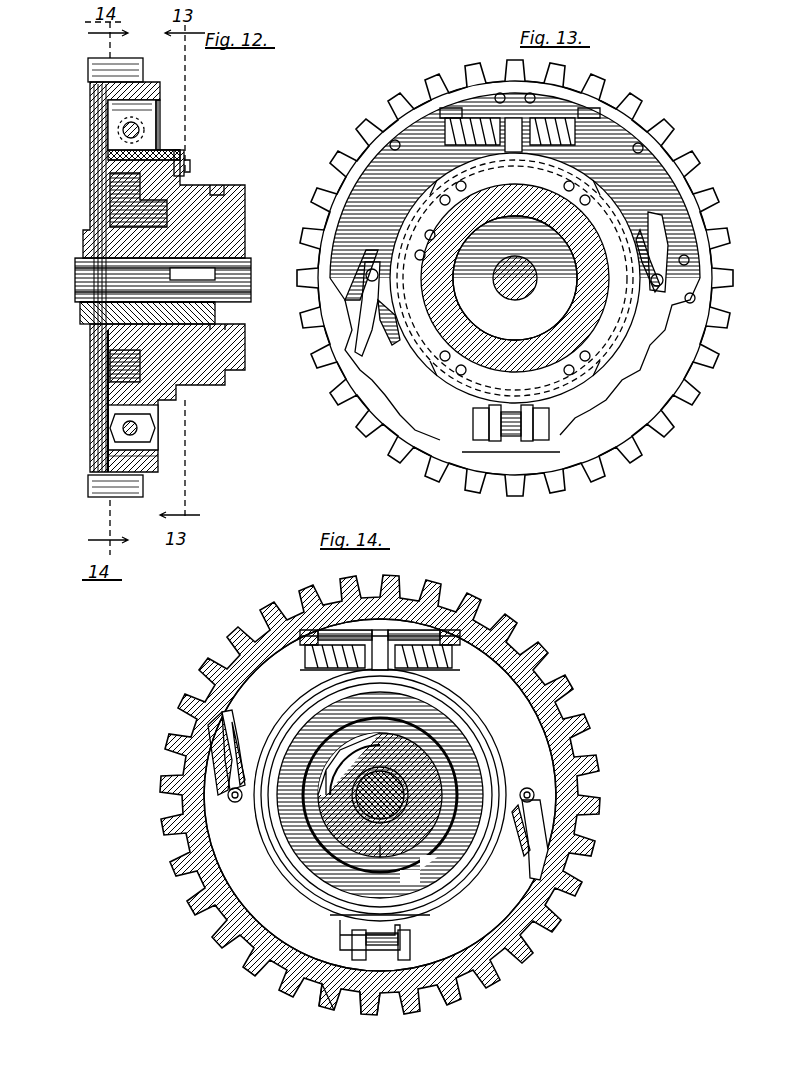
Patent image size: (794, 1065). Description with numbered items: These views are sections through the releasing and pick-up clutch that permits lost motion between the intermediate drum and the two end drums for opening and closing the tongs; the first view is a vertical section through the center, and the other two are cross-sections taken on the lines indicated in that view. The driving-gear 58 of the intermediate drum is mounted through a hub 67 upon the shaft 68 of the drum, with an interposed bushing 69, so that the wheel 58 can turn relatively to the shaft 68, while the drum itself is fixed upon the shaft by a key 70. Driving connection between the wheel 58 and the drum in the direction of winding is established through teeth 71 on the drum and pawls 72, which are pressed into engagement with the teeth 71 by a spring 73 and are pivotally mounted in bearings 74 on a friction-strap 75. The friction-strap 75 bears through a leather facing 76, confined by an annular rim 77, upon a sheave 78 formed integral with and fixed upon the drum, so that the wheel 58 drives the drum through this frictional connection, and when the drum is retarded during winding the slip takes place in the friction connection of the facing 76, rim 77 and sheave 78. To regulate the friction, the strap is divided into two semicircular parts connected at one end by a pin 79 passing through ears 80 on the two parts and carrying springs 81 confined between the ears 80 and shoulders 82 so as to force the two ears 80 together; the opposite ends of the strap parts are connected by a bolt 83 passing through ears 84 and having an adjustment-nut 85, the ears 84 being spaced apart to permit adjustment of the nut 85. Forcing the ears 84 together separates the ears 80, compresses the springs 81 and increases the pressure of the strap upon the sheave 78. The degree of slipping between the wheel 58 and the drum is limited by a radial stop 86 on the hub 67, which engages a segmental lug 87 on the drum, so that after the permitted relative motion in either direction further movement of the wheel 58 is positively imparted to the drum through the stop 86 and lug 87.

In FIG. 12, the driving-gear 58 is at (88, 70).
In FIG. 13, the driving-gear 58 is at (515, 80).
In FIG. 14, the driving-gear 58 is at (283, 607).
In FIG. 12, the hub 67 is at (90, 318).
In FIG. 12, the shaft 68 is at (78, 285).
In FIG. 12, the bushing 69 is at (80, 308).
In FIG. 12, the key 70 is at (215, 276).
In FIG. 13, the teeth 71 is at (668, 166).
In FIG. 14, the teeth 71 is at (545, 678).
In FIG. 13, the pawls 72 is at (667, 252).
In FIG. 14, the pawls 72 is at (225, 755).
In FIG. 13, the spring 73 is at (652, 232).
In FIG. 14, the spring 73 is at (238, 772).
In FIG. 14, the bearings 74 is at (235, 803).
In FIG. 12, the friction-strap 75 is at (162, 152).
In FIG. 14, the friction-strap 75 is at (502, 720).
In FIG. 12, the leather facing 76 is at (160, 145).
In FIG. 14, the leather facing 76 is at (470, 737).
In FIG. 12, the annular rim 77 is at (150, 190).
In FIG. 13, the annular rim 77 is at (560, 378).
In FIG. 12, the sheave 78 is at (182, 186).
In FIG. 12, the pin 79 is at (138, 126).
In FIG. 13, the pin 79 is at (620, 128).
In FIG. 14, the pin 79 is at (490, 656).
In FIG. 13, the ears 80 is at (560, 100).
In FIG. 14, the ears 80 is at (372, 640).
In FIG. 13, the springs 81 is at (406, 128).
In FIG. 14, the springs 81 is at (345, 640).
In FIG. 13, the shoulders 82 is at (470, 112).
In FIG. 14, the shoulders 82 is at (315, 640).
In FIG. 14, the bolt 83 is at (374, 1010).
In FIG. 14, the ears 84 is at (326, 1006).
In FIG. 13, the adjustment-nut 85 is at (511, 428).
In FIG. 14, the adjustment-nut 85 is at (412, 943).
In FIG. 14, the radial stop 86 is at (335, 855).
In FIG. 12, the segmental lug 87 is at (100, 345).
In FIG. 14, the segmental lug 87 is at (430, 832).